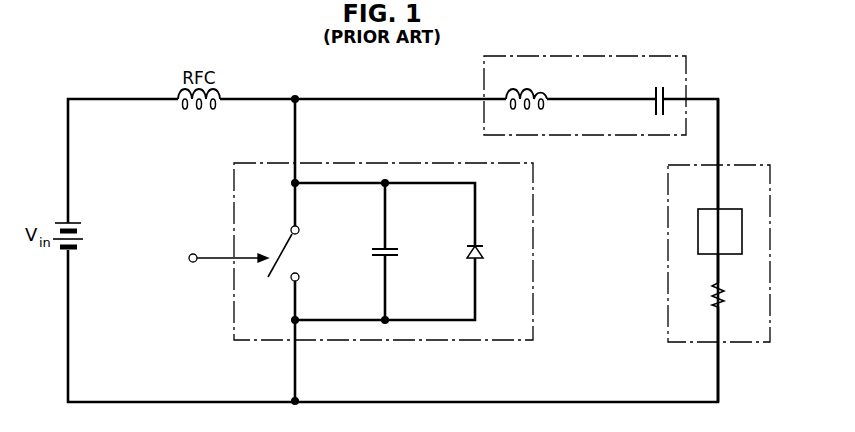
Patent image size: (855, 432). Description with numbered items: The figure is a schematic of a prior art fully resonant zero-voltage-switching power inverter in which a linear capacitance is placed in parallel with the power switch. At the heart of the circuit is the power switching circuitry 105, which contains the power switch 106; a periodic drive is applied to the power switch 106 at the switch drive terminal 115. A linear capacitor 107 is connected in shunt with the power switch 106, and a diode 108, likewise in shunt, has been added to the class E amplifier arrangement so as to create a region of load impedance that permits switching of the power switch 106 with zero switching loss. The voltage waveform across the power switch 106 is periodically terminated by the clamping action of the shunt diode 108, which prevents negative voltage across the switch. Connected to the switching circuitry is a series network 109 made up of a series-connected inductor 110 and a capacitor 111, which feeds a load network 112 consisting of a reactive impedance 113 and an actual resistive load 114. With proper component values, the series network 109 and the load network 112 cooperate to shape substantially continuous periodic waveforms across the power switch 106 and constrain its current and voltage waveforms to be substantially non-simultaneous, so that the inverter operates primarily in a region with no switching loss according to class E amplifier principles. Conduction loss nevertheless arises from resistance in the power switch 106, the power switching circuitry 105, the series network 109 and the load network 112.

The power switching circuitry 105 is at (234, 174).
The power switch 106 is at (294, 253).
The linear capacitor 107 is at (403, 255).
The diode 108 is at (495, 255).
The series network 109 is at (568, 56).
The inductor 110 is at (526, 87).
The capacitor 111 is at (661, 90).
The load network 112 is at (668, 193).
The reactive impedance 113 is at (753, 203).
The resistive load 114 is at (737, 295).
The switch drive terminal 115 is at (215, 257).